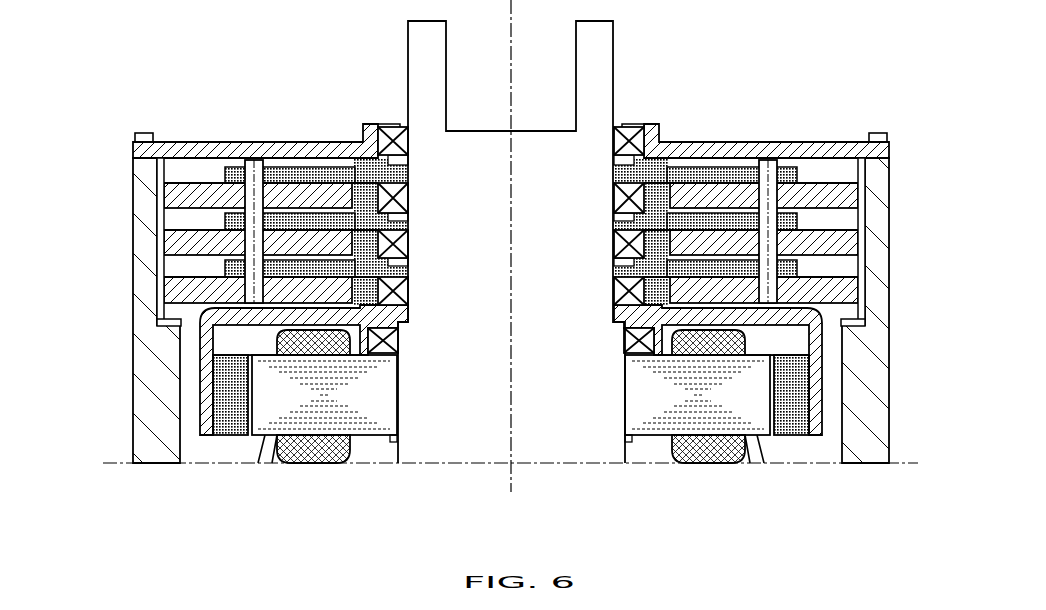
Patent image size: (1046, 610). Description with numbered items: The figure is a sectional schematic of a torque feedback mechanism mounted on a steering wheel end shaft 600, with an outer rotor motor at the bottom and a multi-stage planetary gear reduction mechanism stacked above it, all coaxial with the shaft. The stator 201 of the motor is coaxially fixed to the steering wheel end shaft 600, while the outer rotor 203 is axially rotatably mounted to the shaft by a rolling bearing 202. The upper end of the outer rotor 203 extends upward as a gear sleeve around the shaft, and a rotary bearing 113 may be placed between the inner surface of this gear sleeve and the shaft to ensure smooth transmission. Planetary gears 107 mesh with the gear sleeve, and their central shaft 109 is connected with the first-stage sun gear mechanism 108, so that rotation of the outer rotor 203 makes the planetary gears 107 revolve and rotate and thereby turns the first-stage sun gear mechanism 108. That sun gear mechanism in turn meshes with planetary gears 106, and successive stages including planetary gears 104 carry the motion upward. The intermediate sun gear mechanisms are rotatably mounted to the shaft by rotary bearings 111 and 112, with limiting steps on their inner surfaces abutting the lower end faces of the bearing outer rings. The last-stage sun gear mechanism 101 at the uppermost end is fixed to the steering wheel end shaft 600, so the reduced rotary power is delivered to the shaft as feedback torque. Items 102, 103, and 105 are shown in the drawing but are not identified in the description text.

The last-stage sun gear mechanism 101 is at (365, 172).
The inner spacer ring 102 is at (243, 247).
The fastening bolt 103 is at (262, 187).
The planetary gears 104 is at (308, 202).
The positioning pin 105 is at (165, 178).
The planetary gears 106 is at (180, 240).
The planetary gears 107 is at (157, 277).
The first-stage sun gear mechanism 108 is at (160, 303).
The central shaft 109 is at (200, 332).
The rotary bearing 111 is at (632, 252).
The rotary bearing 112 is at (641, 258).
The rotary bearing 113 is at (660, 218).
The stator 201 is at (710, 407).
The rolling bearing 202 is at (395, 352).
The outer rotor 203 is at (207, 388).
The steering wheel end shaft 600 is at (587, 100).